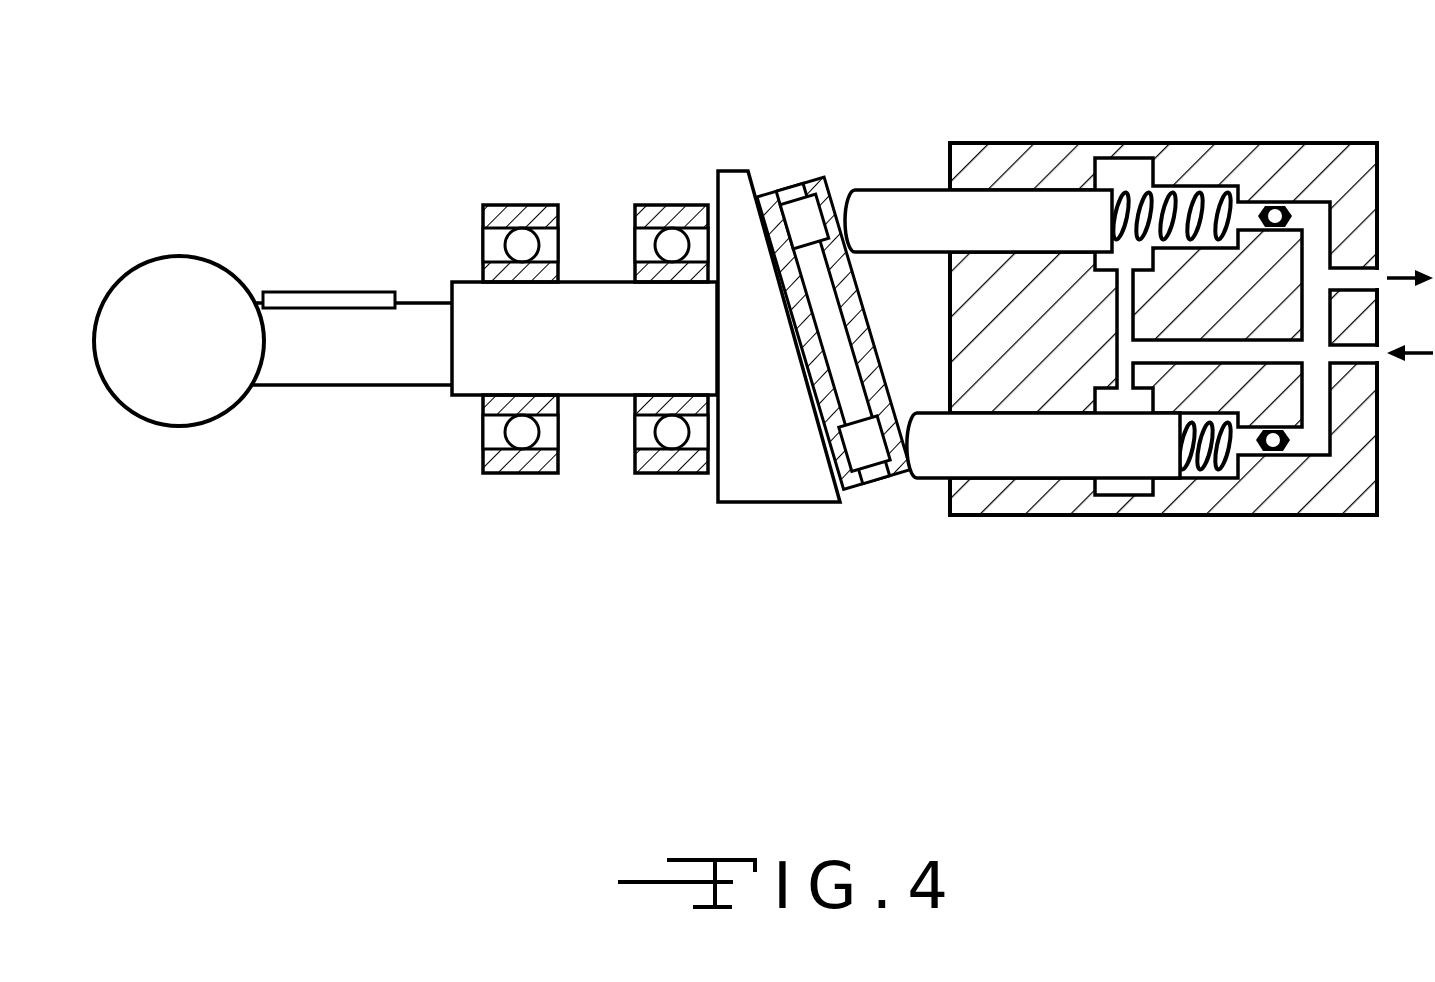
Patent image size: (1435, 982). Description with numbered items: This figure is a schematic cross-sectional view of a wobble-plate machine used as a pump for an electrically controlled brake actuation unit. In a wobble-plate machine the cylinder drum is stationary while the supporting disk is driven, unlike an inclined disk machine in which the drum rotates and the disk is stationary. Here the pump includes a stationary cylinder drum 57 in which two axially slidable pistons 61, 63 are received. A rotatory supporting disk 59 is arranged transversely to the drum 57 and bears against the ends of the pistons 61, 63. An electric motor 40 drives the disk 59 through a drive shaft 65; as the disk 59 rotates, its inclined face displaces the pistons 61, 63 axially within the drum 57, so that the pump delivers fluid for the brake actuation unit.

The motor 40 is at (202, 425).
The drive shaft 65 is at (427, 330).
The rotatory supporting disk 59 is at (795, 207).
The piston 61 is at (925, 208).
The piston 63 is at (982, 460).
The stationary cylinder drum 57 is at (1262, 484).